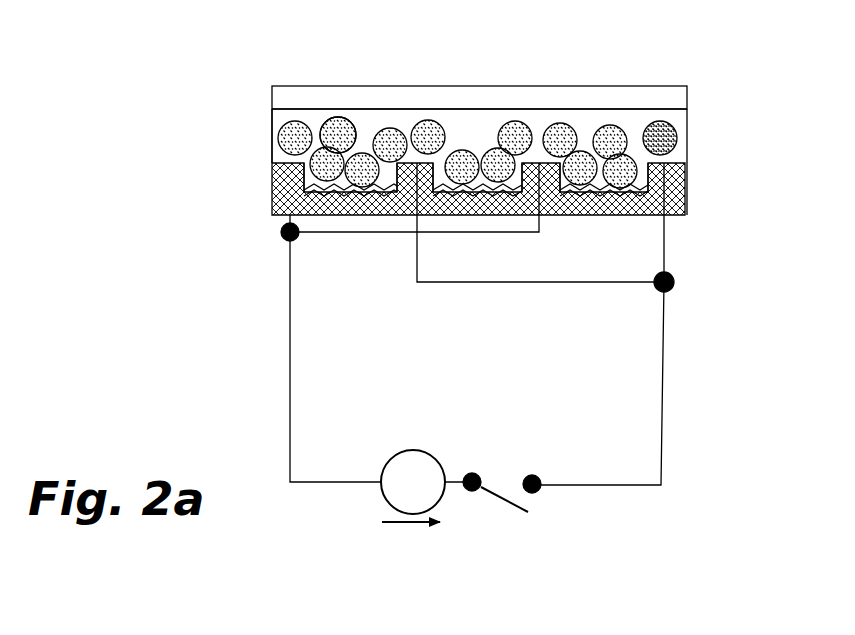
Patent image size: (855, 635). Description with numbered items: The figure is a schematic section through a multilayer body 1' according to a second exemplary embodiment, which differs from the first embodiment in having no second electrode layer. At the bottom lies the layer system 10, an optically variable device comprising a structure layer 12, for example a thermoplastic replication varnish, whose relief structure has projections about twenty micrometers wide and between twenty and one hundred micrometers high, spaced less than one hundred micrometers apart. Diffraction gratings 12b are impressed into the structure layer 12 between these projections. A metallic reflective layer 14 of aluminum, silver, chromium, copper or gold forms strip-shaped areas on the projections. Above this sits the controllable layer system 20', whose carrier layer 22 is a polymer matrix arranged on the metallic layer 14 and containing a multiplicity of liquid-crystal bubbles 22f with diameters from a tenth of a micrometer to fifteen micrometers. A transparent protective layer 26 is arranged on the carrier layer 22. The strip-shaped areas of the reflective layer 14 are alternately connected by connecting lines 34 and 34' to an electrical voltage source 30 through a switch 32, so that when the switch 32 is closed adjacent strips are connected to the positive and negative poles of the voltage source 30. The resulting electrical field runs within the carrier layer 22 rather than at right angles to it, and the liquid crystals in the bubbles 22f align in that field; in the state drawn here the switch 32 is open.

The multilayer body 1' is at (393, 61).
The layer system 10 is at (690, 163).
The structure layer 12 is at (270, 196).
The diffraction grating 12b is at (340, 216).
The metallic reflective layer 14 is at (690, 146).
The controllable layer system 20' is at (238, 136).
The carrier layer 22 is at (592, 126).
The liquid-crystal bubbles 22f is at (348, 130).
The transparent protective layer 26 is at (498, 96).
The electrical voltage source 30 is at (400, 540).
The switch 32 is at (495, 510).
The connecting line 34 is at (407, 373).
The connecting line 34' is at (599, 324).